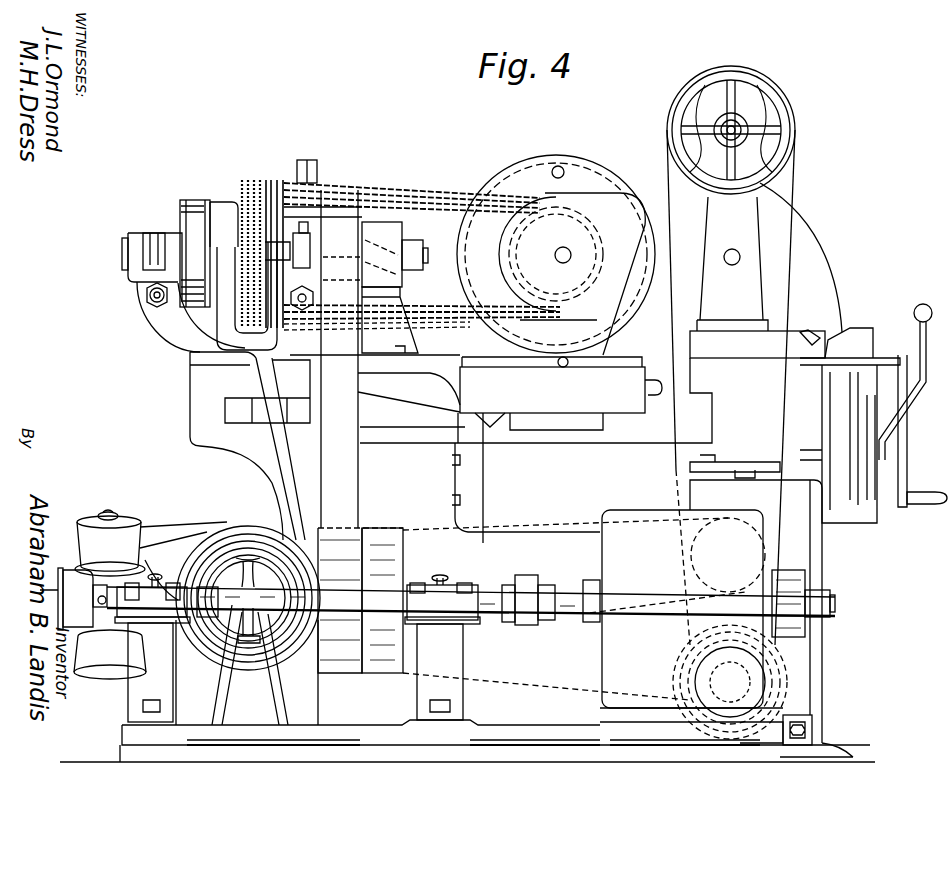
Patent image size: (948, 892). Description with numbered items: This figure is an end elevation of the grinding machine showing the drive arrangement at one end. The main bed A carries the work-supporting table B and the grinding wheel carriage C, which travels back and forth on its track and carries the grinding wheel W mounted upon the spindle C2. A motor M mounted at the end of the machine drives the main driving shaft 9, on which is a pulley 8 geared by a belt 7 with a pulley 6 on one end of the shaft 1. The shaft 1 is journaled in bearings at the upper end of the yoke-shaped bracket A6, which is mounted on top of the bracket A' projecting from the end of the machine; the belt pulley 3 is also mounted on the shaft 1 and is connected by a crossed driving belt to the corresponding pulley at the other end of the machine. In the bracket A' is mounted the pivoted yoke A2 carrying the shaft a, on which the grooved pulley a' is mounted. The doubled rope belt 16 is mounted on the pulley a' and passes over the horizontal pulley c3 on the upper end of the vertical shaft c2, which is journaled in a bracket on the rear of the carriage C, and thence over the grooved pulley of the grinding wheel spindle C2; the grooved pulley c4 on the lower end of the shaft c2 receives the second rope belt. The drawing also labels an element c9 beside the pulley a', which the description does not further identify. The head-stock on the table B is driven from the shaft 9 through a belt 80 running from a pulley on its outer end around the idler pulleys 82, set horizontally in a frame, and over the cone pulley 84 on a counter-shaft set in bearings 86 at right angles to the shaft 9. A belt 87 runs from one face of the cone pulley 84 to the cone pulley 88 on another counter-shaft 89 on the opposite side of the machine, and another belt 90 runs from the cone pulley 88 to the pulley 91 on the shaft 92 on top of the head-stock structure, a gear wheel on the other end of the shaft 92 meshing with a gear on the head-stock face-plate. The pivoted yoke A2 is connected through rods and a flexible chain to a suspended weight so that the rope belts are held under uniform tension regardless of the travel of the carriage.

The shaft 1 is at (122, 258).
The belt pulley 3 is at (182, 222).
The pulley 6 is at (362, 225).
The belt 7 is at (340, 431).
The pulley 8 is at (325, 672).
The main driving shaft 9 is at (255, 645).
The rope belt 16 is at (433, 205).
The belt 80 is at (180, 540).
The idler pulleys 82 is at (128, 512).
The cone pulley 84 is at (246, 528).
The bearings 86 is at (232, 632).
The belt 87 is at (464, 647).
The cone pulley 88 is at (688, 672).
The counter-shaft 89 is at (730, 682).
The belt 90 is at (690, 458).
The pulley 91 is at (775, 92).
The shaft 92 is at (735, 125).
The shaft a is at (250, 276).
The grooved pulley a' is at (238, 241).
The vertical shaft c2 is at (308, 162).
The grooved pulley c3 is at (274, 196).
The grooved pulley c4 is at (365, 314).
The clutch disc c9 is at (258, 200).
The spindle C2 is at (561, 248).
The grinding wheel W is at (556, 254).
The main bed A is at (541, 450).
The bracket A' is at (305, 446).
The pivoted yoke A2 is at (253, 363).
The yoke-shaped bracket A6 is at (140, 361).
The work supporting table B is at (795, 281).
The grinding wheel carriage C is at (561, 393).
The motor M is at (628, 618).